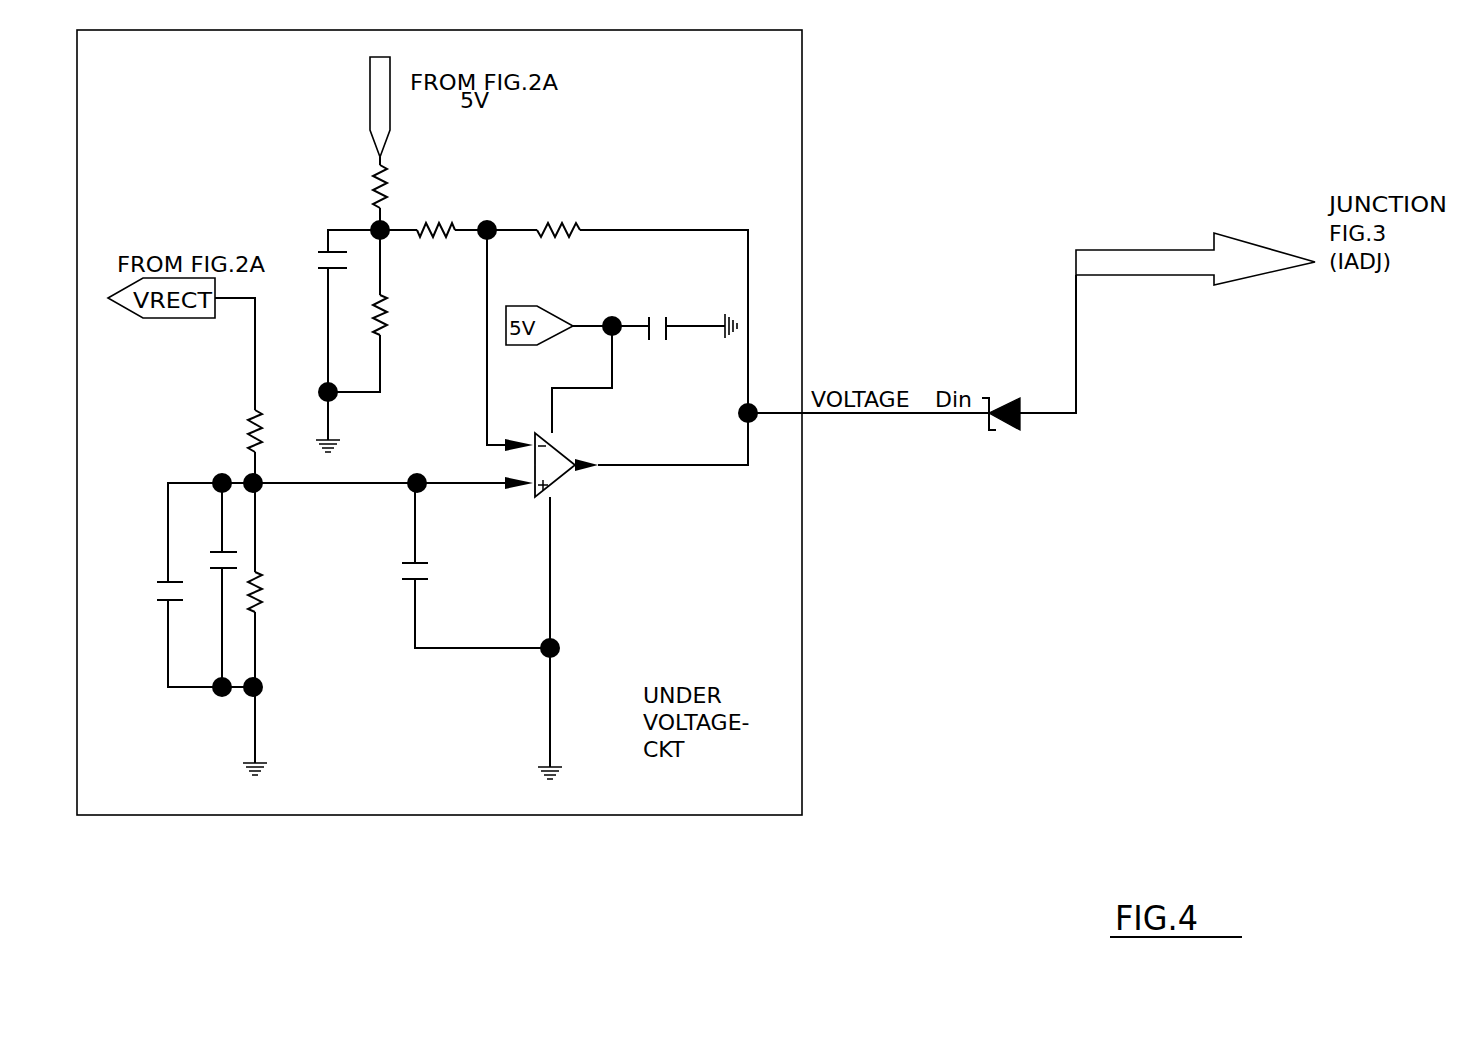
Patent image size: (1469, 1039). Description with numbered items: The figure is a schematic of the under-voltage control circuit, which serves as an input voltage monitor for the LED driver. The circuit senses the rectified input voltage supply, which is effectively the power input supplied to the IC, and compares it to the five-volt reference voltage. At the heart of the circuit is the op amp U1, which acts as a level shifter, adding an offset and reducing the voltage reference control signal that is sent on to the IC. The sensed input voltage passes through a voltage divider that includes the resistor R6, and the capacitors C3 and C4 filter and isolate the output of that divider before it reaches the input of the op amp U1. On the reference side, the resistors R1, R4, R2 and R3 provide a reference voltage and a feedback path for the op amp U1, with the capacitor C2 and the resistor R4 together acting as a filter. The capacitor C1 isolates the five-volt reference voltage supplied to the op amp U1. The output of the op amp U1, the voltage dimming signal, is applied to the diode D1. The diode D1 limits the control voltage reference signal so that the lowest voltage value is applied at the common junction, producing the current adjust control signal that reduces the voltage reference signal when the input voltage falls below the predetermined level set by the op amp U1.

The resistor R1 is at (362, 186).
The resistor R2 is at (436, 217).
The resistor R3 is at (396, 324).
The resistor R4 is at (400, 315).
The resistor R6 is at (276, 592).
The capacitor C1 is at (661, 311).
The capacitor C2 is at (318, 257).
The capacitor C3 is at (278, 579).
The capacitor C4 is at (207, 557).
The op amp U1 is at (549, 455).
The diode D1 is at (1007, 430).